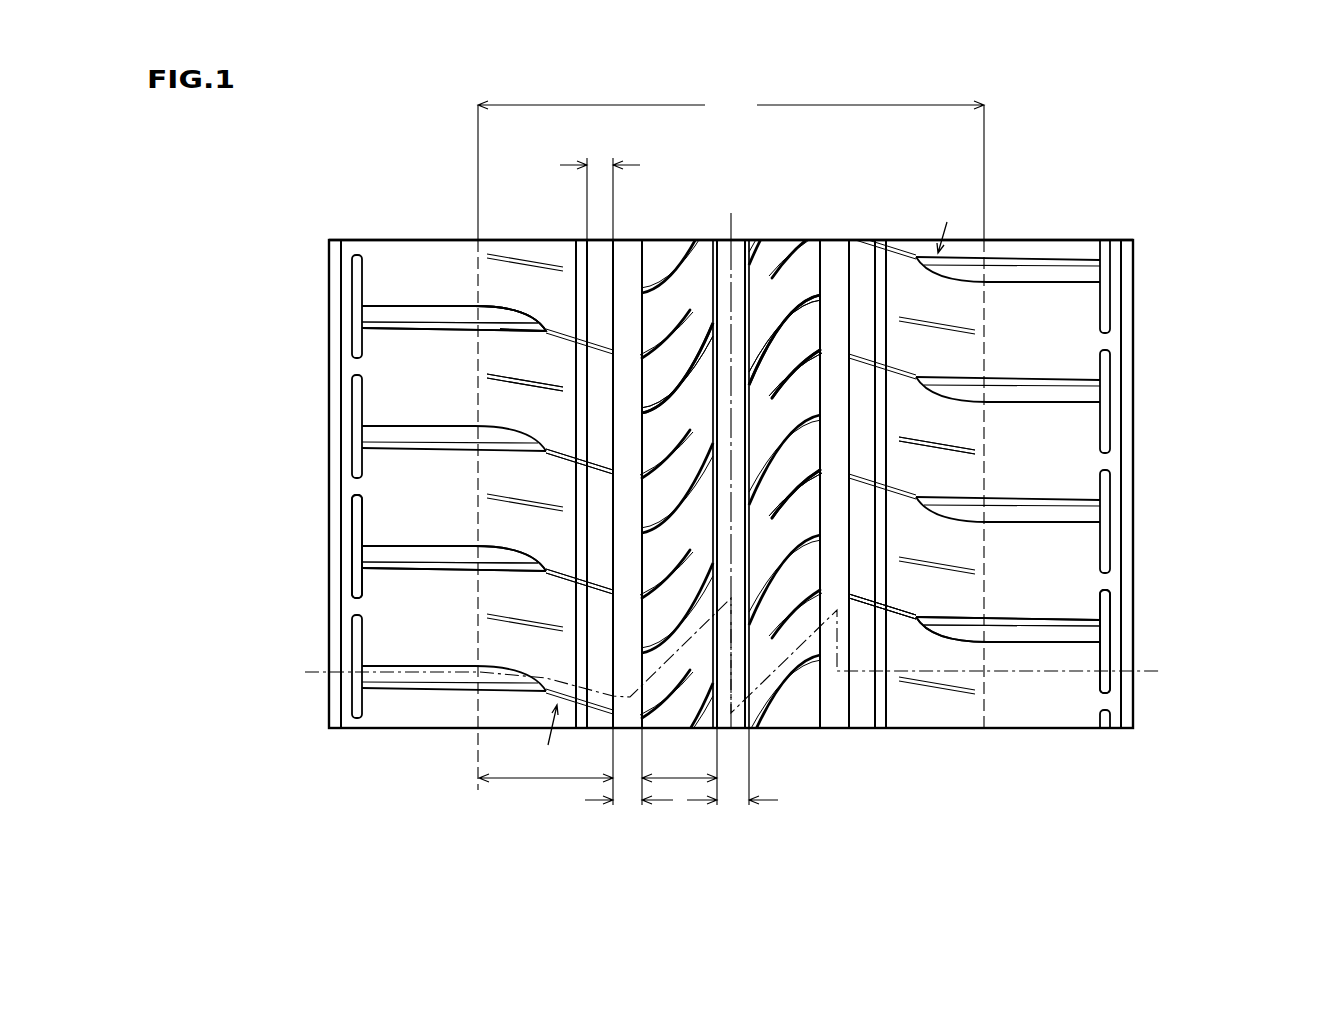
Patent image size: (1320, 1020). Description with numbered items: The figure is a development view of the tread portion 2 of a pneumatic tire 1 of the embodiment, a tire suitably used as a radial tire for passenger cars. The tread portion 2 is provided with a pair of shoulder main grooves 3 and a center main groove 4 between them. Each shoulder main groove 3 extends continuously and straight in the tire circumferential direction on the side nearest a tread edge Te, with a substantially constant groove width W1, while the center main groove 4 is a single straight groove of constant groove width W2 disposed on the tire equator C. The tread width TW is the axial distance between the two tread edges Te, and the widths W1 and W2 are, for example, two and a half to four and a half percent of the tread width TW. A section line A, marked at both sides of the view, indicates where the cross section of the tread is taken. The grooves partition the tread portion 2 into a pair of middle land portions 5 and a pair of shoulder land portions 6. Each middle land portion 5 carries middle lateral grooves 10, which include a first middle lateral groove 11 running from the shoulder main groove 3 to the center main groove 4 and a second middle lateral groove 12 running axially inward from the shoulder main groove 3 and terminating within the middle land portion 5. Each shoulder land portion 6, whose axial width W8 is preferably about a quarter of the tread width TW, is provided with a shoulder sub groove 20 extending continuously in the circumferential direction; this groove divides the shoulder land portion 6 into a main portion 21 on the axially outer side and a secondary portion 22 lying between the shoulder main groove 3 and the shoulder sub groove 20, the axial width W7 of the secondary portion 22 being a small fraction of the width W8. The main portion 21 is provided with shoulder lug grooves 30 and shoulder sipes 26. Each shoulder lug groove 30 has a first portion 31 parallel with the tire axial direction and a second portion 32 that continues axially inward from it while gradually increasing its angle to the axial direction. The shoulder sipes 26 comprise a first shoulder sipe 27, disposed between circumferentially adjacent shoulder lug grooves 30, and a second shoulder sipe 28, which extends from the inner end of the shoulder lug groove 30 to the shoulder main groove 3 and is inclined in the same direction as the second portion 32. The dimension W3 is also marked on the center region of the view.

The pneumatic tire 1 is at (1138, 220).
The tread portion 2 is at (767, 219).
The shoulder main groove 3 is at (631, 270).
The center main groove 4 is at (742, 280).
The middle land portion 5 is at (684, 270).
The shoulder land portion 6 is at (547, 270).
The middle lateral groove 10 is at (663, 392).
The first middle lateral groove 11 is at (783, 337).
The second middle lateral groove 12 is at (797, 377).
The shoulder sub groove 20 is at (584, 273).
The main portion 21 is at (962, 287).
The secondary portion 22 is at (867, 287).
The shoulder sipe 26 is at (507, 378).
The first shoulder sipe 27 is at (963, 457).
The second shoulder sipe 28 is at (895, 611).
The shoulder lug groove 30 is at (252, 230).
The first portion 31 is at (463, 315).
The second portion 32 is at (540, 322).
The tread width TW is at (731, 106).
The tread edge Te is at (478, 240).
The tire equator C is at (729, 456).
The A-A line A is at (1164, 655).
The groove width of shoulder main groove W1 is at (629, 816).
The groove width of center main groove W2 is at (732, 782).
The width W3 is at (679, 766).
The width of secondary portion W7 is at (600, 187).
The width of shoulder land portion W8 is at (546, 766).